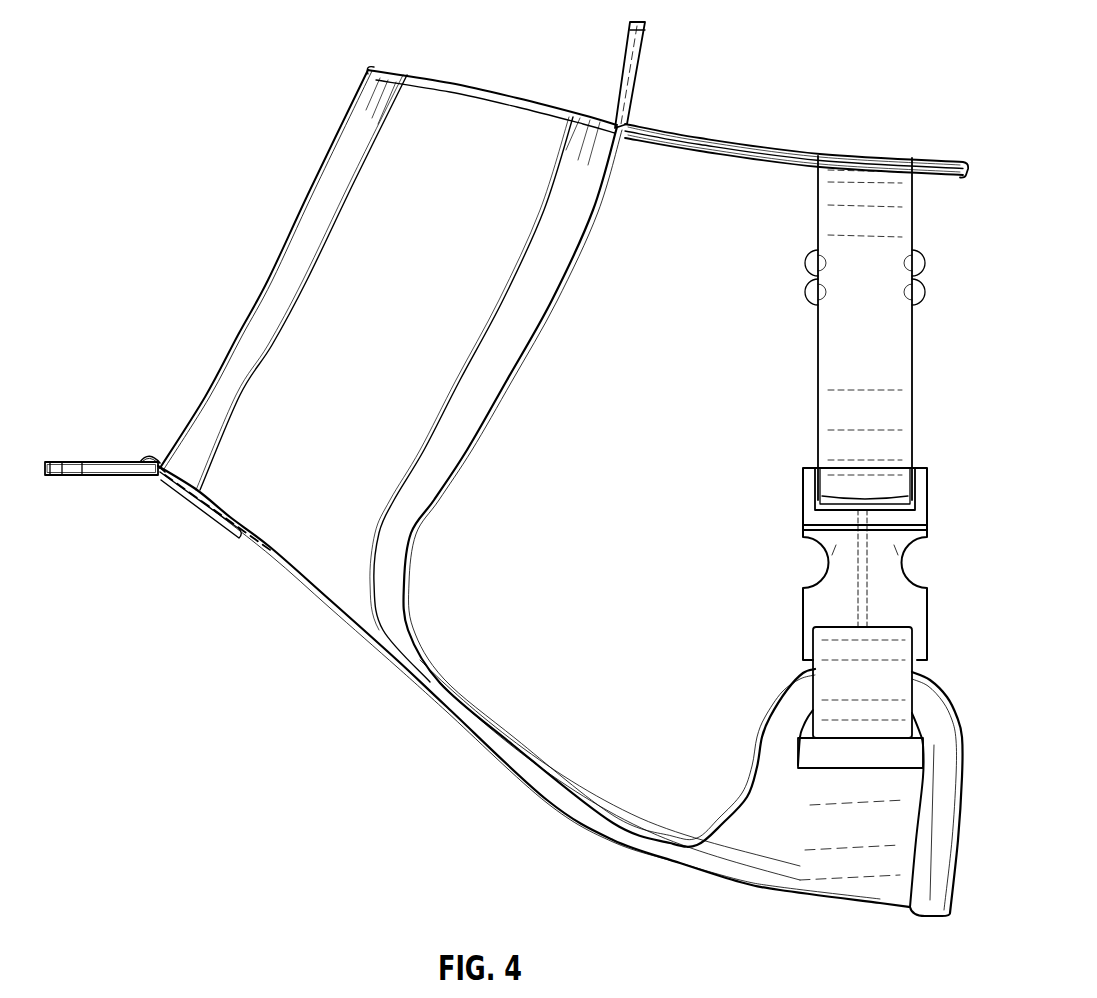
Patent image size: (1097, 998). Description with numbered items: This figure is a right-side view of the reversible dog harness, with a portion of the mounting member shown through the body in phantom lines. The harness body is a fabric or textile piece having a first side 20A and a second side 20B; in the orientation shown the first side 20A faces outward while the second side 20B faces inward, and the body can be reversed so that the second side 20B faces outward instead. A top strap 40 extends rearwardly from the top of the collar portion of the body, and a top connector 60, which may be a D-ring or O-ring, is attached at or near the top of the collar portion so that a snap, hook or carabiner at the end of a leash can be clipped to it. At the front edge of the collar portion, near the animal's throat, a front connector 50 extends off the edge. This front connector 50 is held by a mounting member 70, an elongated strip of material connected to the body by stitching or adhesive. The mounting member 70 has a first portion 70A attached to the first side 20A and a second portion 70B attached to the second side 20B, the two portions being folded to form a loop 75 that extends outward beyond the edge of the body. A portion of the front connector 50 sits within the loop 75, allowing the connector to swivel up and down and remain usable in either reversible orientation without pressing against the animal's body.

The first side 20A is at (433, 290).
The second side 20B is at (263, 542).
The top strap 40 is at (703, 137).
The front connector 50 is at (80, 470).
The top connector 60 is at (630, 65).
The mounting member 70 is at (146, 437).
The first portion 70A is at (208, 494).
The second portion 70B is at (205, 498).
The loop 75 is at (162, 462).